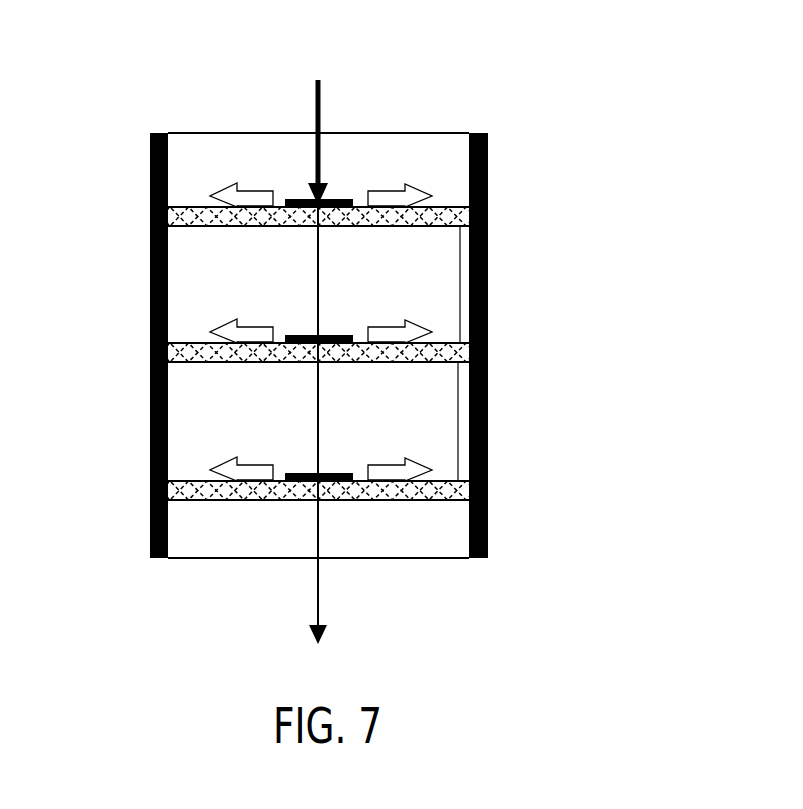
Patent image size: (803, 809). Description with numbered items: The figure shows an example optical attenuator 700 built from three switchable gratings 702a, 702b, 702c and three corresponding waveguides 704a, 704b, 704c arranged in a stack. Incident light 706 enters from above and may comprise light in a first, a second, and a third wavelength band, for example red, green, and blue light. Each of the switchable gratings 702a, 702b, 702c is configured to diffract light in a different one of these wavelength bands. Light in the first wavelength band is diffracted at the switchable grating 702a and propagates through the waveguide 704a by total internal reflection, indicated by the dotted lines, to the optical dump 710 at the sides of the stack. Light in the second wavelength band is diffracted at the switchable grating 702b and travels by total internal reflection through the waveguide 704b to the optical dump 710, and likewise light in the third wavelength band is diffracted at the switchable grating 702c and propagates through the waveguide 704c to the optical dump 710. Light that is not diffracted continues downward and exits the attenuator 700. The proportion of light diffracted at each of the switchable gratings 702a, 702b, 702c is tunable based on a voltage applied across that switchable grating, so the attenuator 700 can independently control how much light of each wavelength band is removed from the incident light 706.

The optical attenuator 700 is at (556, 46).
The switchable grating 702a is at (276, 228).
The switchable grating 702b is at (276, 364).
The switchable grating 702c is at (276, 502).
The waveguide 704a is at (346, 199).
The waveguide 704b is at (346, 335).
The waveguide 704c is at (346, 472).
The incident light 706 is at (322, 98).
The optical dump 710 is at (150, 354).